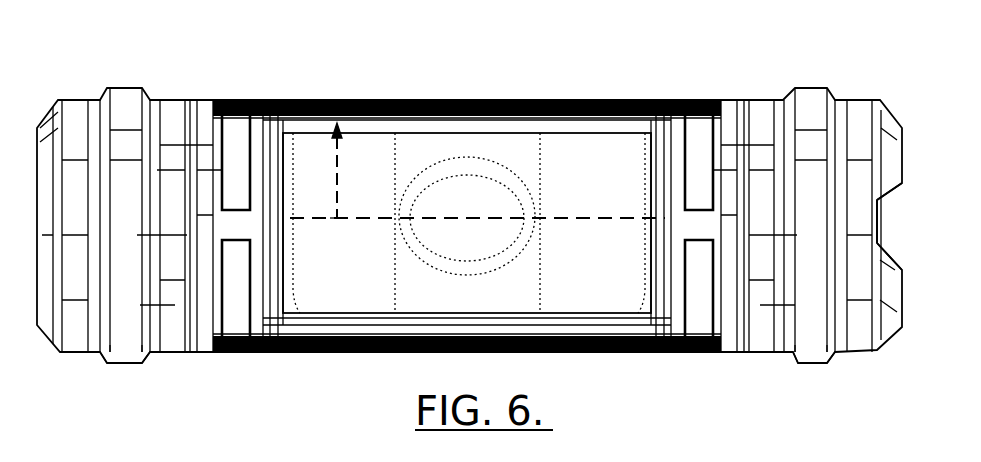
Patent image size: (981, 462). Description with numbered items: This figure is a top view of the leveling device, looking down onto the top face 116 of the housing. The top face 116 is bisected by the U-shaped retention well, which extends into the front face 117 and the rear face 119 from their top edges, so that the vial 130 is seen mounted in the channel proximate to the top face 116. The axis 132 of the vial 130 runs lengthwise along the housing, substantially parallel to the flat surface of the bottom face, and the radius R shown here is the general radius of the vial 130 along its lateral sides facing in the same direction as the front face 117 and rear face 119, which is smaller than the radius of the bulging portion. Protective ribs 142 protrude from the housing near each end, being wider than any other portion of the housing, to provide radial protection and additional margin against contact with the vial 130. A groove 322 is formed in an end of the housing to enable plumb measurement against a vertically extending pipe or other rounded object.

The top face 116 is at (175, 213).
The rear face 119 is at (420, 102).
The front face 117 is at (315, 353).
The vial 130 is at (588, 150).
The axis 132 is at (445, 218).
The protective ribs 142 is at (133, 353).
The groove 322 is at (888, 240).